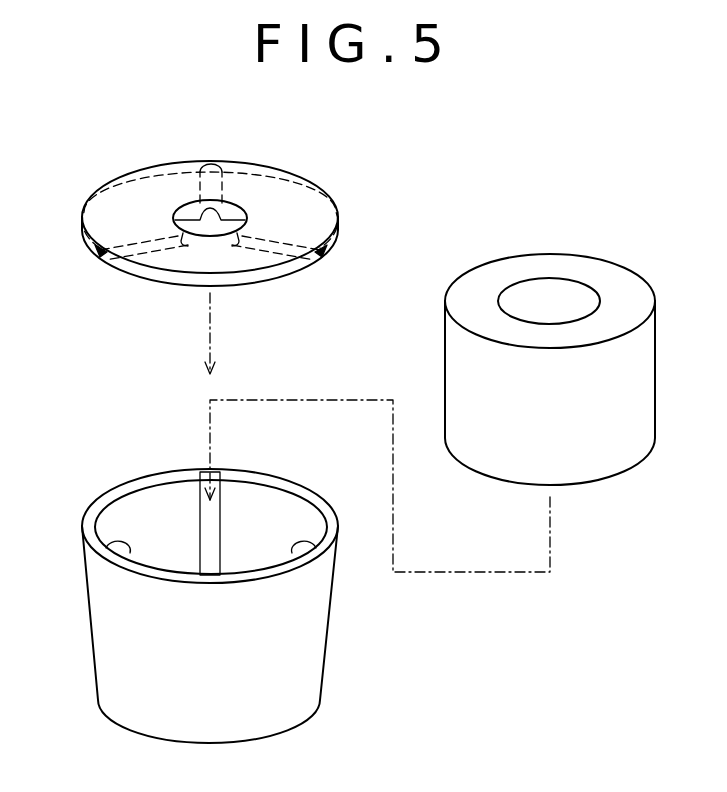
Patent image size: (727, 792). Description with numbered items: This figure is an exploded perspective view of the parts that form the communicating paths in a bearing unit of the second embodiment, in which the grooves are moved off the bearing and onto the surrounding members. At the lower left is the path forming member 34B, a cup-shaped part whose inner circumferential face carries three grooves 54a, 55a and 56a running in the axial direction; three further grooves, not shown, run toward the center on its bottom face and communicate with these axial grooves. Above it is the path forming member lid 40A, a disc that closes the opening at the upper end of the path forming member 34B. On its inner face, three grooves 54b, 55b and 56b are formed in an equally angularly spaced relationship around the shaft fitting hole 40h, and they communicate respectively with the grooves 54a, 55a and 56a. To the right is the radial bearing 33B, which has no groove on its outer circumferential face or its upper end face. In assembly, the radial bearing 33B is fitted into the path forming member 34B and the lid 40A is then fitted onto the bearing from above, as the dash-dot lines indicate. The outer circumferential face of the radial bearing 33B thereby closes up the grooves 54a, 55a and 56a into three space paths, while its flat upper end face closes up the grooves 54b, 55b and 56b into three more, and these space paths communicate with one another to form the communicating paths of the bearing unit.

The path forming member lid 40A is at (257, 220).
The shaft fitting hole 40h is at (230, 222).
The groove 55b is at (198, 163).
The groove 54b is at (100, 250).
The groove 56b is at (323, 250).
The path forming member 34B is at (229, 580).
The groove 55a is at (203, 470).
The groove 54a is at (132, 548).
The groove 56a is at (285, 550).
The radial bearing 33B is at (615, 497).